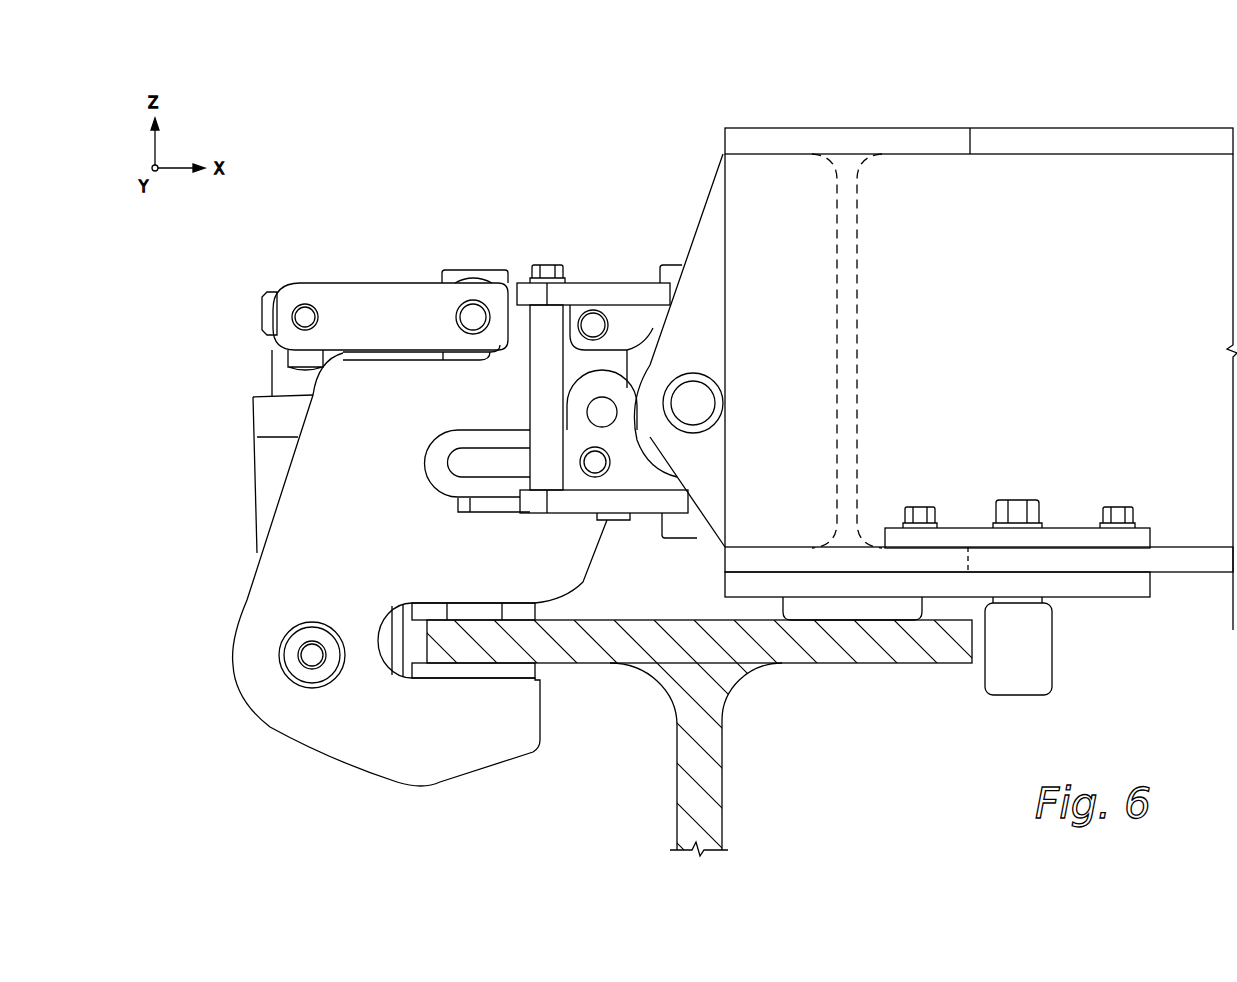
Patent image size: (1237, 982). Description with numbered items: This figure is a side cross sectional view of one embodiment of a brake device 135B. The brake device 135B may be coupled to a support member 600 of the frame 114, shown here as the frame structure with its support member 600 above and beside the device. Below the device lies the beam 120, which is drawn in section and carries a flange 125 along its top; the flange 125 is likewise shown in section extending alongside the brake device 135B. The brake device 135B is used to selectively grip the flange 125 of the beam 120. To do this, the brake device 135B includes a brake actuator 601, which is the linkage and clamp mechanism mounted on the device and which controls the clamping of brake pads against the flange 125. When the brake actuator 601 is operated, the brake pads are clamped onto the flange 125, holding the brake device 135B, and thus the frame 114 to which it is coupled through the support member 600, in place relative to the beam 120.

The frame 114 is at (925, 127).
The support member 600 is at (836, 217).
The brake actuator 601 is at (238, 356).
The brake device 135B is at (240, 747).
The flange 125 is at (877, 665).
The beam 120 is at (723, 821).